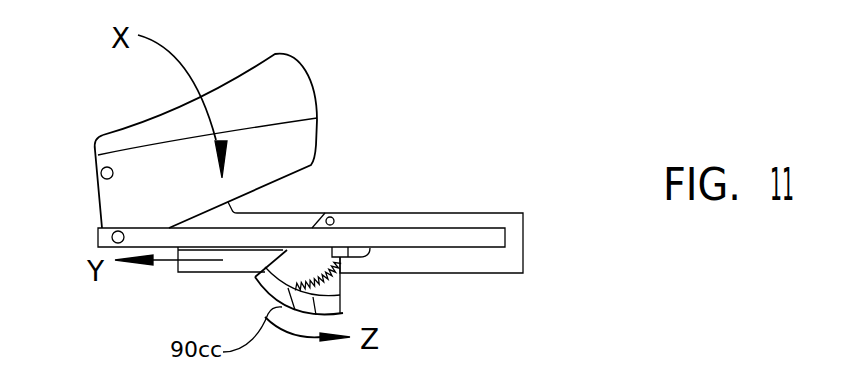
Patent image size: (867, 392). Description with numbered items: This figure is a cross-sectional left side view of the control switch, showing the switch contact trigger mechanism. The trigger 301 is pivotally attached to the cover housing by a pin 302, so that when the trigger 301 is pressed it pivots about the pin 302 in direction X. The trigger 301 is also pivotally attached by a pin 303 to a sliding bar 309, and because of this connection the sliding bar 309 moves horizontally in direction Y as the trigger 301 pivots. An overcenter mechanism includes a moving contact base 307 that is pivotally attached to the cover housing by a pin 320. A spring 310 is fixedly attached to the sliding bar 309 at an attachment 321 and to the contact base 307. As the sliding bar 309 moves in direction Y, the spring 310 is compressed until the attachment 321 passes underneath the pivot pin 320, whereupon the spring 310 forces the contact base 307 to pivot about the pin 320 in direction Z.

The trigger 301 is at (290, 84).
The pin 302 is at (100, 174).
The pin 303 is at (118, 231).
The moving contact base 307 is at (272, 279).
The sliding bar 309 is at (462, 240).
The spring 310 is at (340, 285).
The pin 320 is at (332, 217).
The attachment 321 is at (370, 248).